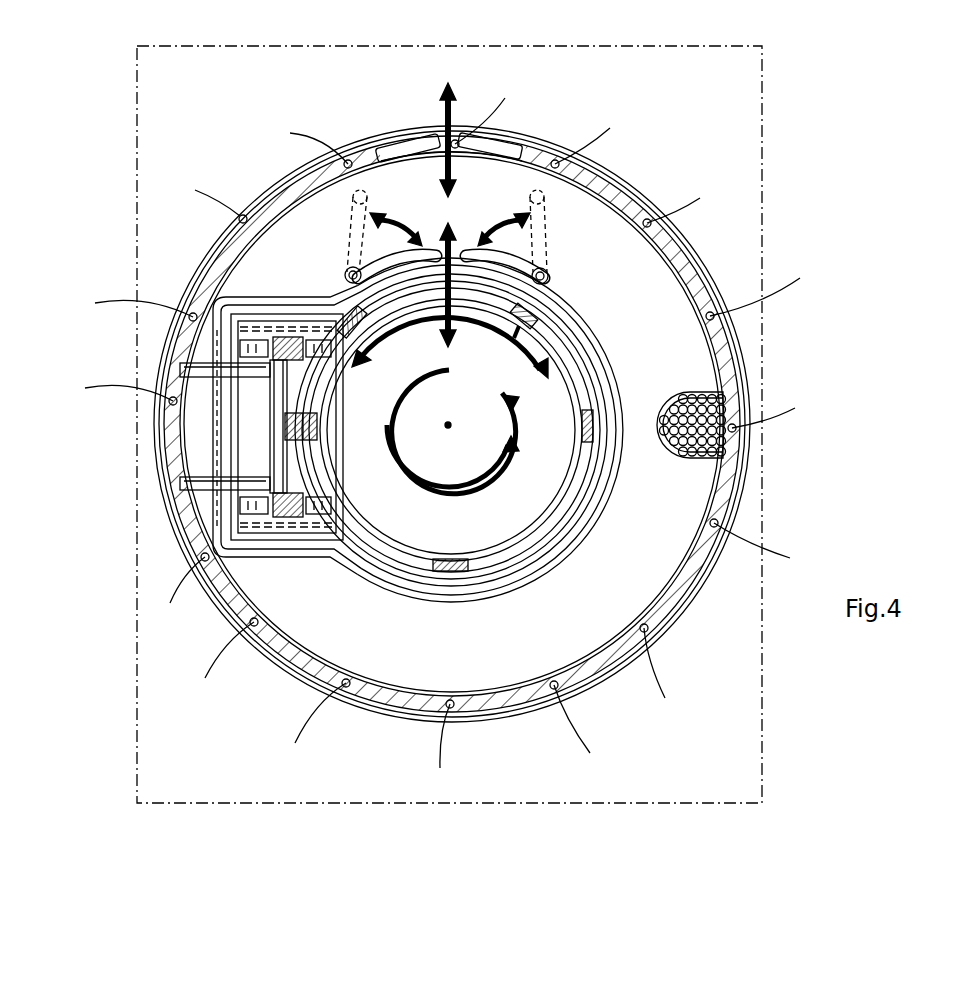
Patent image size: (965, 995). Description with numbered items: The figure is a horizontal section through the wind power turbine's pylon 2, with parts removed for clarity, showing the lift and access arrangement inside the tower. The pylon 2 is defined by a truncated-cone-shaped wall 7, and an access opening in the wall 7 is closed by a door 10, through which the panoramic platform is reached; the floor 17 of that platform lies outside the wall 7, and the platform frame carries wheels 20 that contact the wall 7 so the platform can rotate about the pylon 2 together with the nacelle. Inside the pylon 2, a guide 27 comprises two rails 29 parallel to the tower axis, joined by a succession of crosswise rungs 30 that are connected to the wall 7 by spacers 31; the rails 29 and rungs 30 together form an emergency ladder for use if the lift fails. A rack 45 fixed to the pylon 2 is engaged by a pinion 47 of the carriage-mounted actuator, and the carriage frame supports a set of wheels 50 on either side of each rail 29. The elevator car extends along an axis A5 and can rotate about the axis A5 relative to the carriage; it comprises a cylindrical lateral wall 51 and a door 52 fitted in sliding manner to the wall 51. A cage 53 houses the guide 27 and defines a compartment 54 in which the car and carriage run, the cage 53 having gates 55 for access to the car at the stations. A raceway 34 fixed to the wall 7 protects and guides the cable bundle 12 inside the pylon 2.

The pylon 2 is at (722, 262).
The wall 7 is at (678, 592).
The door 10 is at (510, 126).
The cable bundle 12 is at (728, 446).
The floor 17 is at (726, 164).
The wheels 20 is at (443, 426).
The guide 27 is at (198, 440).
The rails 29 is at (286, 338).
The rungs 30 is at (280, 430).
The spacers 31 is at (184, 368).
The raceway 34 is at (727, 386).
The rack 45 is at (296, 338).
The pinion 47 is at (318, 426).
The wheels 50 is at (330, 350).
The cylindrical lateral wall 51 is at (598, 350).
The door 52 is at (548, 304).
The cage 53 is at (596, 536).
The compartment 54 is at (598, 504).
The gates 55 is at (462, 235).
The axis A5 is at (455, 430).